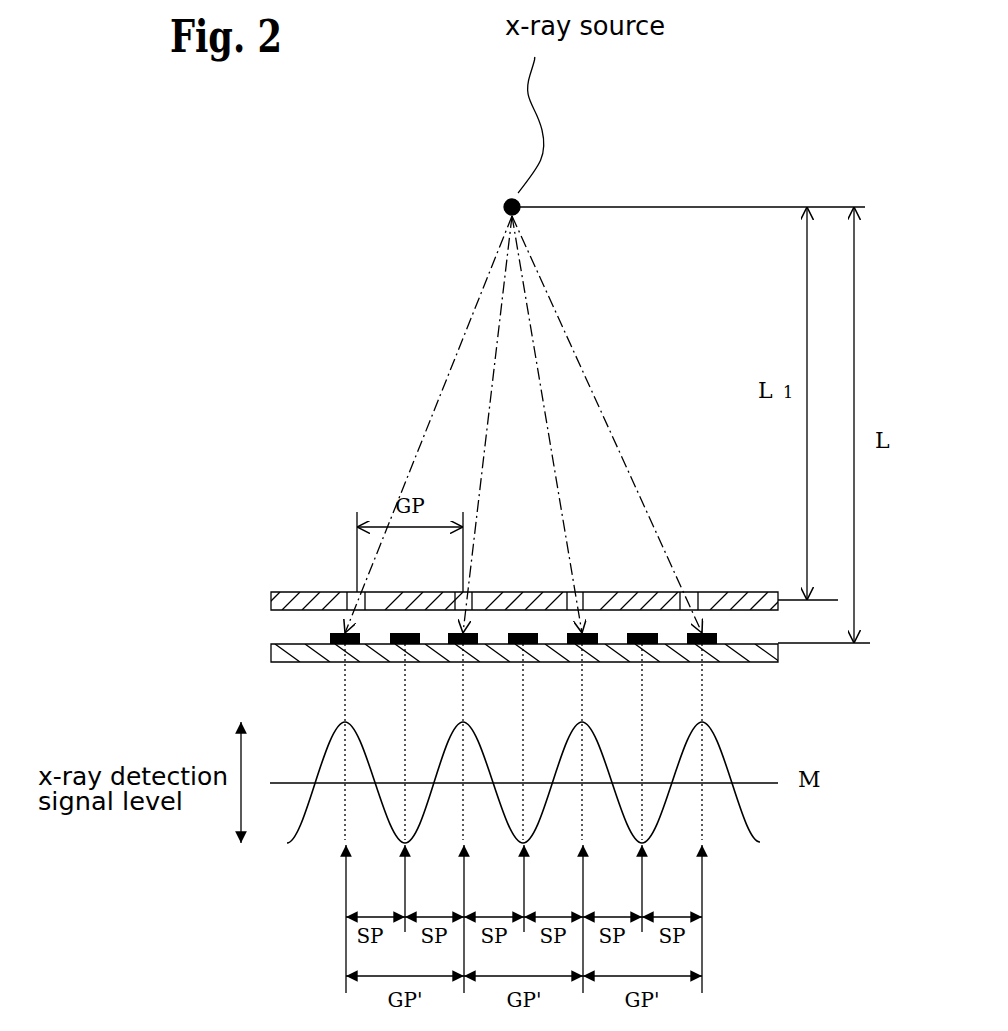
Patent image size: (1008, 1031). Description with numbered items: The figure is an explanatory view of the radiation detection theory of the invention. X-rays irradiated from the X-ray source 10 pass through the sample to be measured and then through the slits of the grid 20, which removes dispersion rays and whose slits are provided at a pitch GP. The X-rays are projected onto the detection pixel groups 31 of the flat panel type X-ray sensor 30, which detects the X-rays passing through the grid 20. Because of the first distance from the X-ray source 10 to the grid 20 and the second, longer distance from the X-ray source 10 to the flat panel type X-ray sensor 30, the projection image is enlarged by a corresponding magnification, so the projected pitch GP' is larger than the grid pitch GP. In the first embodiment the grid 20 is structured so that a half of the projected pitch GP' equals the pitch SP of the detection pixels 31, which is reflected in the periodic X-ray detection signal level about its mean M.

The X-ray source 10 is at (505, 203).
The grid 20 is at (272, 592).
The flat panel type X-ray sensor 30 is at (745, 658).
The detection pixel groups 31 is at (333, 634).